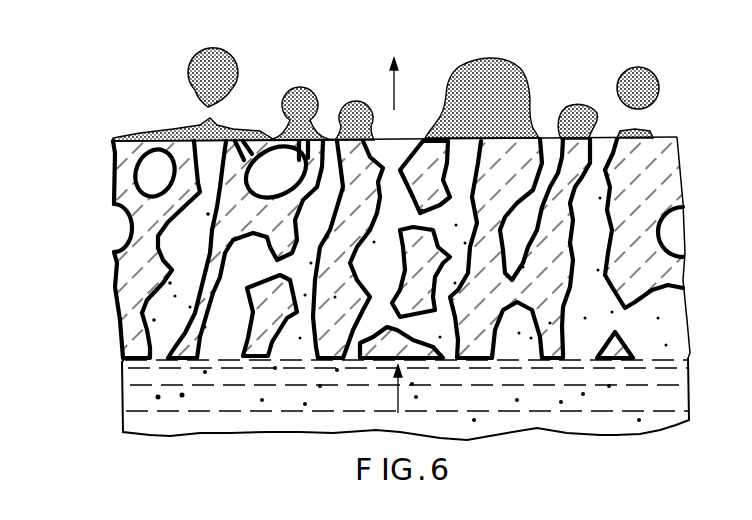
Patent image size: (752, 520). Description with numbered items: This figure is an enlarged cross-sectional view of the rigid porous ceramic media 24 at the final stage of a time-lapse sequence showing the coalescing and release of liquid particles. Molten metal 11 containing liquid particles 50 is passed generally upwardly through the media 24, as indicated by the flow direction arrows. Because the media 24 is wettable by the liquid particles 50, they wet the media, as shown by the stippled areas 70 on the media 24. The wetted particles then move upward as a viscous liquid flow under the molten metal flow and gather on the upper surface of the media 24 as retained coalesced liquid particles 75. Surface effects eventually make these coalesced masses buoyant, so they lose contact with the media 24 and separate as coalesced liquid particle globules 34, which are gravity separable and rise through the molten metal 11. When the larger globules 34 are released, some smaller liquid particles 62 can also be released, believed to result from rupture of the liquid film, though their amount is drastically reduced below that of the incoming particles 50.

The molten metal 11 is at (676, 395).
The rigid porous ceramic media 24 is at (355, 243).
The coalesced liquid particle globules 34 is at (231, 54).
The liquid particles 50 is at (182, 395).
The smaller liquid particles 62 is at (173, 112).
The stippled areas 70 is at (166, 239).
The retained coalesced liquid particles 75 is at (338, 84).